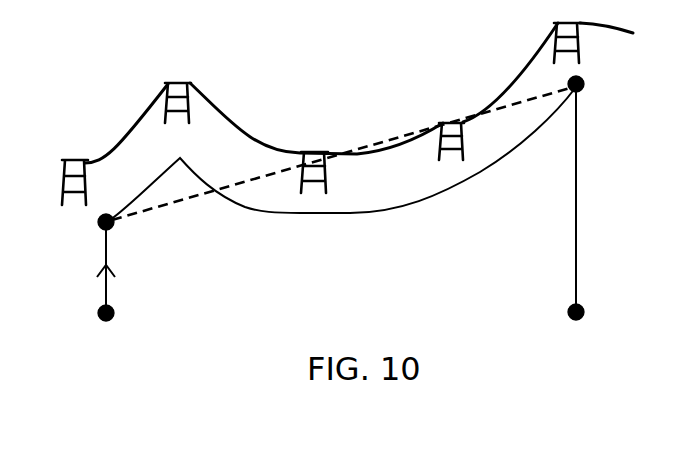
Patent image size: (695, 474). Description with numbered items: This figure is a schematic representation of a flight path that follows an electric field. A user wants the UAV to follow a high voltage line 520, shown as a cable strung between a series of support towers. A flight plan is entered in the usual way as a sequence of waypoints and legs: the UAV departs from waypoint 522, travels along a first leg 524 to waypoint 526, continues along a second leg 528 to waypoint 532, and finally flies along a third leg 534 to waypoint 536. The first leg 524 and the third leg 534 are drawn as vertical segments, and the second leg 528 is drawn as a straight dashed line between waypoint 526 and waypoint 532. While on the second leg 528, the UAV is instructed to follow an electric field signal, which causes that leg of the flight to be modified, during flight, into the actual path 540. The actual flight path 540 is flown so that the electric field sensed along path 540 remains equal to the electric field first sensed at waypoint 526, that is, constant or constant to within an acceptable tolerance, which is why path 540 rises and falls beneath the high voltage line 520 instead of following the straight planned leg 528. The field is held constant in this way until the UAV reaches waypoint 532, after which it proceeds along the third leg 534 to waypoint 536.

The high voltage line 520 is at (112, 152).
The waypoint 522 is at (97, 320).
The first leg 524 is at (102, 287).
The waypoint 526 is at (98, 228).
The second leg 528 is at (160, 208).
The waypoint 532 is at (587, 90).
The third leg 534 is at (578, 177).
The waypoint 536 is at (583, 318).
The path 540 is at (267, 210).